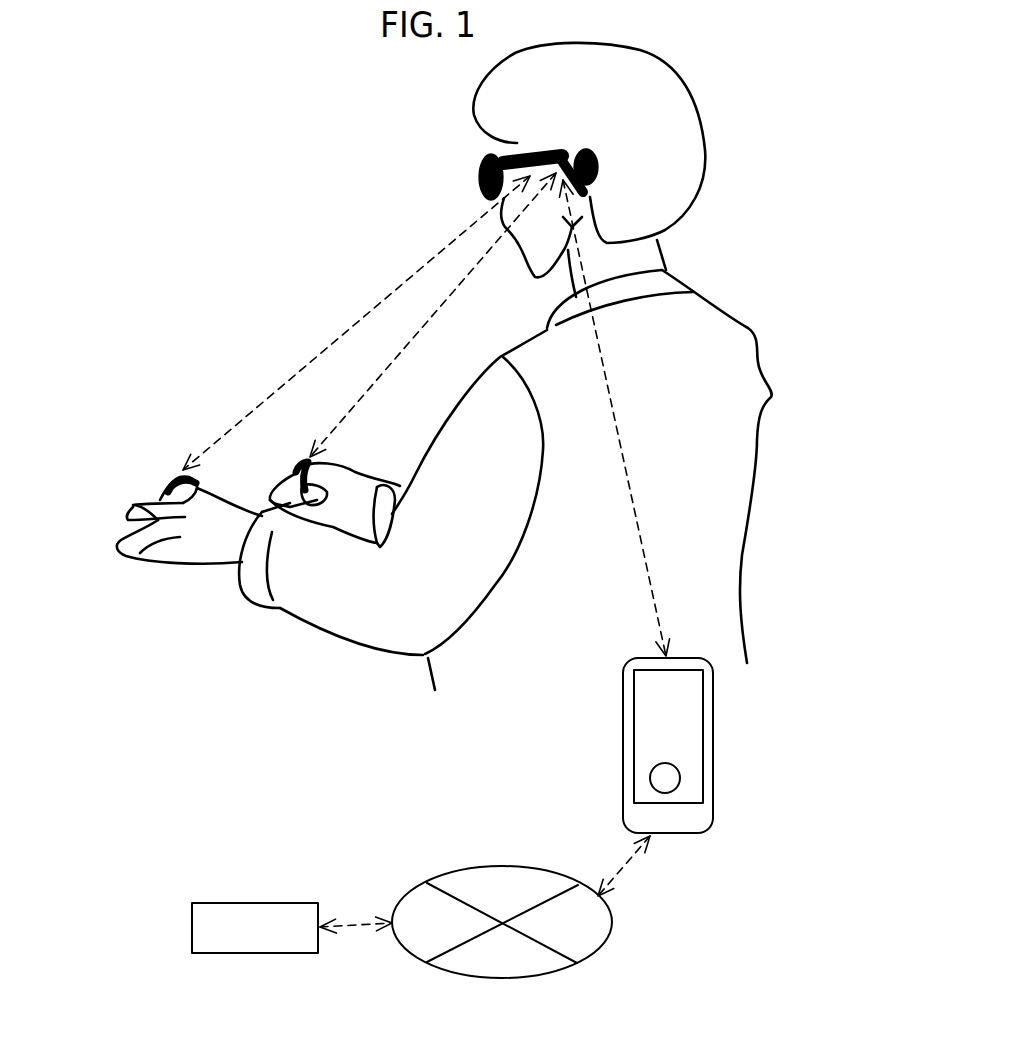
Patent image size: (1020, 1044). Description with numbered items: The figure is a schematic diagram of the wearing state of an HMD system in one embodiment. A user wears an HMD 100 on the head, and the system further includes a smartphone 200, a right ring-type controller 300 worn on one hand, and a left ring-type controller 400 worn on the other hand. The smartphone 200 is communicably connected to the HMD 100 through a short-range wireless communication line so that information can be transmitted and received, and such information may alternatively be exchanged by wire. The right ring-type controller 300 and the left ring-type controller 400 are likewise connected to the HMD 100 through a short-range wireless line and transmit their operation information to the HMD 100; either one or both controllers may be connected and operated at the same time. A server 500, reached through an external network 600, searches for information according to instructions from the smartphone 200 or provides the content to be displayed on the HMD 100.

The HMD 100 is at (490, 157).
The smartphone 200 is at (714, 755).
The right ring-type controller 300 is at (302, 474).
The left ring-type controller 400 is at (172, 485).
The server 500 is at (283, 901).
The external network 600 is at (437, 878).